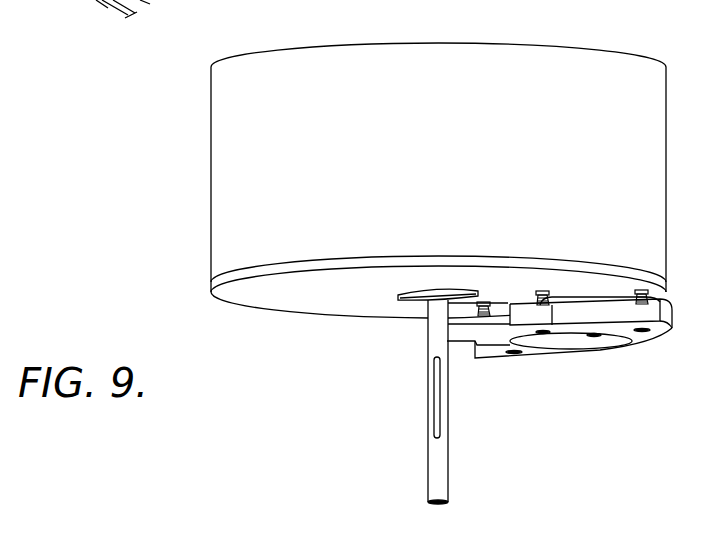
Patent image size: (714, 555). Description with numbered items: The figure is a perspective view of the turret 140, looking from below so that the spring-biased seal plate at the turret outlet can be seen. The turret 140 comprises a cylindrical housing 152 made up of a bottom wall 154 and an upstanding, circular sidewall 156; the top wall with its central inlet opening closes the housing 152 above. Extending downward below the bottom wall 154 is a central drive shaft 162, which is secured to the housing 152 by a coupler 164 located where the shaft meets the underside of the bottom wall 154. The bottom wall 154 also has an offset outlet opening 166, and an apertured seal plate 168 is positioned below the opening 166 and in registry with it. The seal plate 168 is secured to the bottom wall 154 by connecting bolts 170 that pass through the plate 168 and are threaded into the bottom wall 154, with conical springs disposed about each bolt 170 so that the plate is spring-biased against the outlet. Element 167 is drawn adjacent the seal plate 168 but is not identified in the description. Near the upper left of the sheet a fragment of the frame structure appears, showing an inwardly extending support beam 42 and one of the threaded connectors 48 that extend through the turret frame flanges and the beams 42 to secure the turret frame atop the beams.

The support beam 42 is at (105, 0).
The threaded connector 48 is at (146, 0).
The turret 140 is at (384, 141).
The cylindrical housing 152 is at (544, 46).
The bottom wall 154 is at (273, 295).
The sidewall 156 is at (230, 198).
The central drive shaft 162 is at (435, 457).
The coupler 164 is at (410, 299).
The outlet opening 166 is at (598, 294).
The mounting plate 167 is at (577, 300).
The seal plate 168 is at (645, 340).
The connecting bolt 170 is at (533, 297).